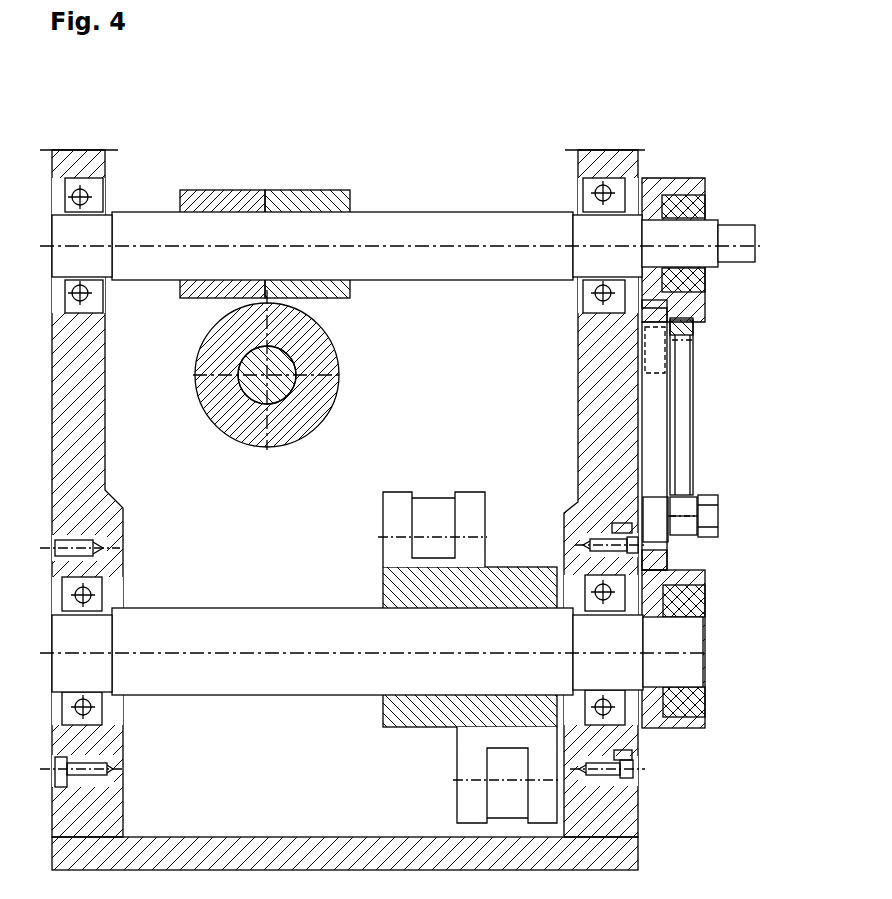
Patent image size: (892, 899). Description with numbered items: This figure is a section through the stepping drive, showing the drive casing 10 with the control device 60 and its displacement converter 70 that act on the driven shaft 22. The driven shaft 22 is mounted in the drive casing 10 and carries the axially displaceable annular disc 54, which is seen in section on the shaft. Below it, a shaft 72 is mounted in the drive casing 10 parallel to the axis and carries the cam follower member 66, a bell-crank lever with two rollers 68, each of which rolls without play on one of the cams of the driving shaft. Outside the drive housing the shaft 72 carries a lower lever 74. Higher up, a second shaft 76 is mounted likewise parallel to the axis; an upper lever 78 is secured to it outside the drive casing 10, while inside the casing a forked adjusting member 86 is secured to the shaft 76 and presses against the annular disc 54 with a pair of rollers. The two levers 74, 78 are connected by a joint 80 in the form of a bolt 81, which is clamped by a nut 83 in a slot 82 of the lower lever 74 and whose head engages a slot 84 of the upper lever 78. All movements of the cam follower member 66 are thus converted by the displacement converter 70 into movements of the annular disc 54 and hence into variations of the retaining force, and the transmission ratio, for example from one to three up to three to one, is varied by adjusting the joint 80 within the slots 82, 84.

The drive casing 10 is at (630, 815).
The driven shaft 22 is at (253, 400).
The annular disc 54 is at (317, 412).
The control device 60 is at (424, 632).
The cam follower member 66 is at (400, 718).
The roller 68 is at (440, 508).
The displacement converter 70 is at (715, 443).
The shaft 72 is at (243, 695).
The lower lever 74 is at (705, 615).
The shaft 76 is at (513, 270).
The upper lever 78 is at (705, 178).
The joint 80 is at (722, 534).
The bolt 81 is at (720, 520).
The slot 82 is at (682, 387).
The nut 83 is at (710, 503).
The slot 84 is at (653, 423).
The forked adjusting member 86 is at (323, 295).